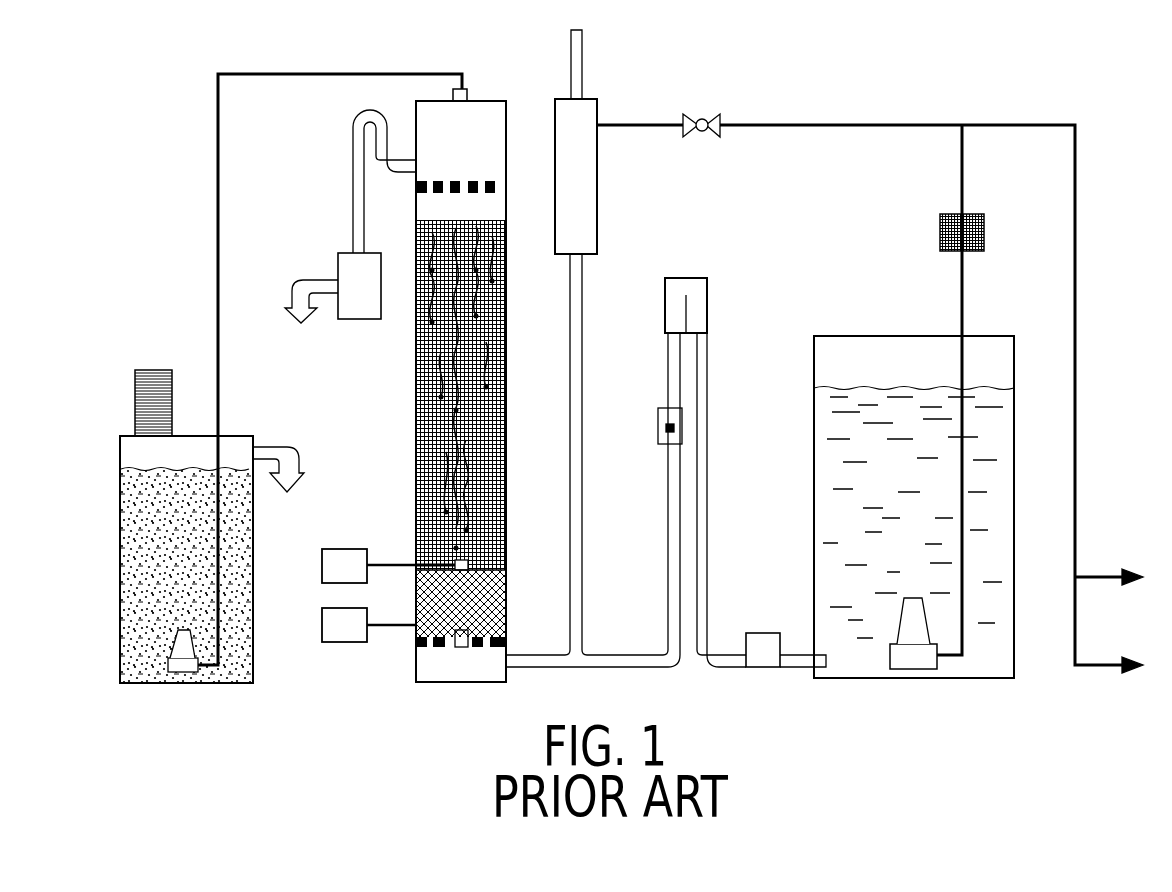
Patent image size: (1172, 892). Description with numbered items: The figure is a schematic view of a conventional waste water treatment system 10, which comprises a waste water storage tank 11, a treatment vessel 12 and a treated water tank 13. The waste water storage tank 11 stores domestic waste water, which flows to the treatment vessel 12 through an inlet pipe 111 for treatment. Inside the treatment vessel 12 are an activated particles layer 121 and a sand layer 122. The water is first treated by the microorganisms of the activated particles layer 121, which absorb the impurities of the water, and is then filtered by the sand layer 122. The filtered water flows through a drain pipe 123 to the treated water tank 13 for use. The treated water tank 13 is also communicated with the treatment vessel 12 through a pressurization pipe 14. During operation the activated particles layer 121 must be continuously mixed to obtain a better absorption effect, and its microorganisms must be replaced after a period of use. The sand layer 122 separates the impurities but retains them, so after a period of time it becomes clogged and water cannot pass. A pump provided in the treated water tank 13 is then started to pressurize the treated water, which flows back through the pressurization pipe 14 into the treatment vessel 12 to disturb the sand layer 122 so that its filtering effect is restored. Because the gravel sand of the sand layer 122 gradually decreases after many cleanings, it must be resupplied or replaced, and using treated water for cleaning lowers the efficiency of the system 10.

The waste water treatment system 10 is at (210, 52).
The waste water storage tank 11 is at (120, 552).
The inlet pipe 111 is at (218, 123).
The treatment vessel 12 is at (417, 383).
The activated particles layer 121 is at (506, 343).
The sand layer 122 is at (506, 597).
The drain pipe 123 is at (668, 652).
The treated water tank 13 is at (845, 347).
The pressurization pipe 14 is at (790, 125).